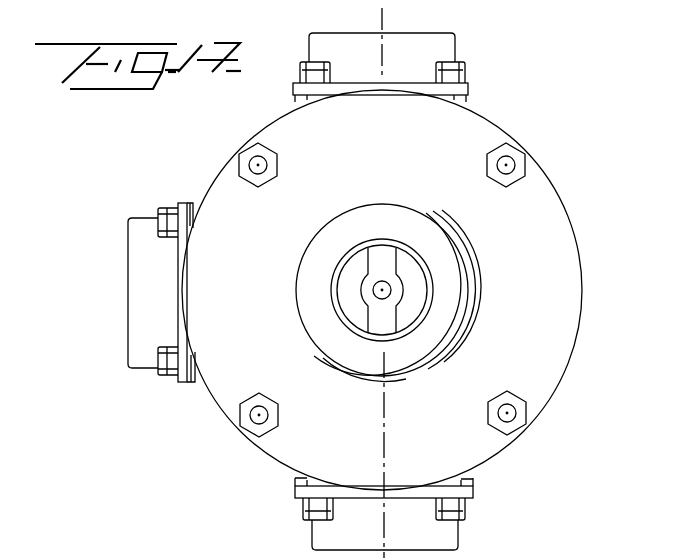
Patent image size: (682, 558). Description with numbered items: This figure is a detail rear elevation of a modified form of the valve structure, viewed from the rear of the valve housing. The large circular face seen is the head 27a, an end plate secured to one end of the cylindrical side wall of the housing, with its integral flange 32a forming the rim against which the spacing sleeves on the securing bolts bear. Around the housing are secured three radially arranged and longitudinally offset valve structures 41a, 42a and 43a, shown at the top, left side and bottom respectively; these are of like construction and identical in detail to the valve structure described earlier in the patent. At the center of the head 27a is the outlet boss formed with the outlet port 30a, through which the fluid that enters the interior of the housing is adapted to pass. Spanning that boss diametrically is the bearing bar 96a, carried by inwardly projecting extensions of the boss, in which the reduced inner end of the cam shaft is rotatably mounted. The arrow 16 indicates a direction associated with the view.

The direction of motion arrow 16 is at (327, 21).
The valve structure 41a is at (468, 100).
The valve structure 42a is at (200, 383).
The valve structure 43a is at (472, 477).
The flange 32a is at (567, 238).
The head 27a is at (406, 293).
The outlet port 30a is at (415, 328).
The bearing bar 96a is at (390, 258).